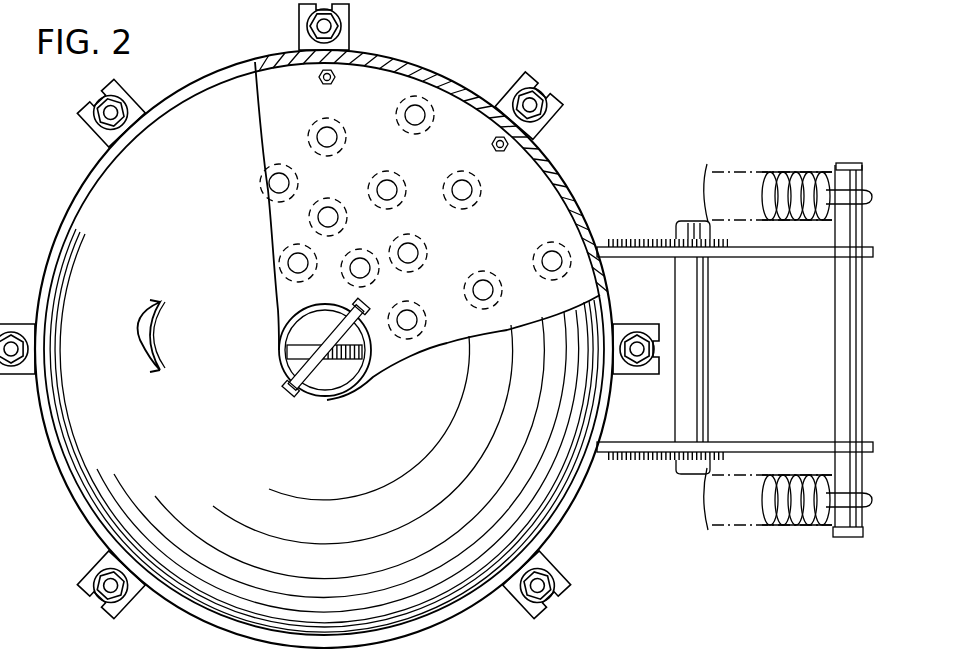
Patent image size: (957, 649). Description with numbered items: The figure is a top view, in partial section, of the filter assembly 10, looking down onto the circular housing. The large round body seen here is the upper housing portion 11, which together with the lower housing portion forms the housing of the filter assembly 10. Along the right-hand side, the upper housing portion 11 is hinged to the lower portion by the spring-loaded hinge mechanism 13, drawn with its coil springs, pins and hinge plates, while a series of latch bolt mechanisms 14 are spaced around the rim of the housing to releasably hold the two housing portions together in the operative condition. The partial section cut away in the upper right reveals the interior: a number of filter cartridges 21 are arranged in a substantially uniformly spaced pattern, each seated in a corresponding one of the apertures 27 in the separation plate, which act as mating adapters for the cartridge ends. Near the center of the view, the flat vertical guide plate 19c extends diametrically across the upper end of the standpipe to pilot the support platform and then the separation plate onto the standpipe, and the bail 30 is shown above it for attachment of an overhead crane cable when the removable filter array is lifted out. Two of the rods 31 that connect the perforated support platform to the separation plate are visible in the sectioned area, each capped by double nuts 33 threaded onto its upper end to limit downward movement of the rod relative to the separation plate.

The filter assembly 10 is at (203, 64).
The upper housing portion 11 is at (133, 466).
The spring-loaded hinge mechanism 13 is at (755, 336).
The latch bolt mechanisms 14 is at (104, 610).
The flat vertical guide plate 19c is at (303, 345).
The filter cartridges 21 is at (464, 278).
The apertures 27 is at (540, 259).
The bail 30 is at (353, 309).
The rods 31 is at (315, 83).
The double nuts 33 is at (320, 70).